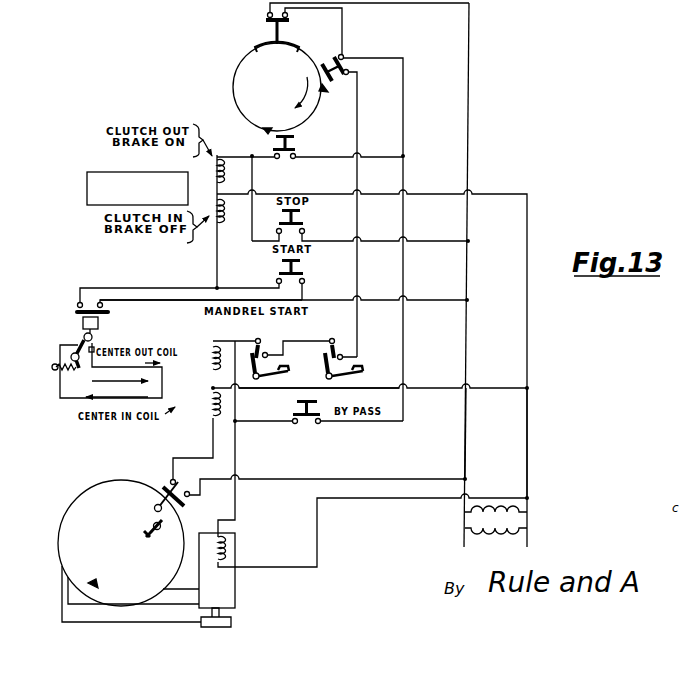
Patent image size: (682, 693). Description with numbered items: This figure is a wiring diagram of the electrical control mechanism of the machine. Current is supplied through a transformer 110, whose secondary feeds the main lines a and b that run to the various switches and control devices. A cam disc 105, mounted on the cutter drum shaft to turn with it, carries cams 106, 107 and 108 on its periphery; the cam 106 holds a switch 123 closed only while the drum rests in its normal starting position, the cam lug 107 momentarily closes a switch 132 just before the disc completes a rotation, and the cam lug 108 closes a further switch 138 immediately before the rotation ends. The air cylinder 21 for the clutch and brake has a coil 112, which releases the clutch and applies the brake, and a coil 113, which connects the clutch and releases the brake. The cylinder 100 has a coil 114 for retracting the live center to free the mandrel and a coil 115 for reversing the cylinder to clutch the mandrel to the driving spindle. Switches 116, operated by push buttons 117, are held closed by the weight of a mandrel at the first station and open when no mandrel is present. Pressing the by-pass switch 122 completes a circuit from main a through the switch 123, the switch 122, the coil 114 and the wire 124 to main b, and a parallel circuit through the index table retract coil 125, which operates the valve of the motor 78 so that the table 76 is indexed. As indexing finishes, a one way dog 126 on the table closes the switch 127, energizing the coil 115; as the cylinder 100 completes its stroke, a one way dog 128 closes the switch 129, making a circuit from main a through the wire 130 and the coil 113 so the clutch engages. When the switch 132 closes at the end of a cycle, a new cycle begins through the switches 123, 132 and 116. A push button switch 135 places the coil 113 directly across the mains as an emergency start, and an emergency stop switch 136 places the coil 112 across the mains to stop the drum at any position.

The air motor or cylinder 21 is at (87, 193).
The index table 76 is at (80, 508).
The motor 78 is at (222, 591).
The cylinder or motor 100 is at (66, 398).
The cam disc 105 is at (247, 66).
The cam 106 is at (258, 44).
The cam lug 107 is at (326, 92).
The cam lug 108 is at (264, 130).
The transformer 110 is at (530, 520).
The coil 112 is at (223, 178).
The coil 113 is at (221, 216).
The coil 114 is at (208, 368).
The coil 115 is at (208, 412).
The switches 116 is at (338, 349).
The push buttons 117 is at (276, 370).
The by-pass switch button 122 is at (295, 403).
The switch 123 is at (266, 20).
The wire 124 is at (432, 381).
The index table retract coil 125 is at (222, 552).
The one way dog 126 is at (153, 526).
The switch 127 is at (168, 486).
The one way dog 128 is at (74, 347).
The switch 129 is at (104, 313).
The wire 130 is at (178, 300).
The switch 132 is at (336, 55).
The push button switch 135 is at (301, 265).
The emergency stop switch 136 is at (300, 215).
The switch 138 is at (296, 145).
The main line a is at (466, 455).
The main line b is at (528, 452).